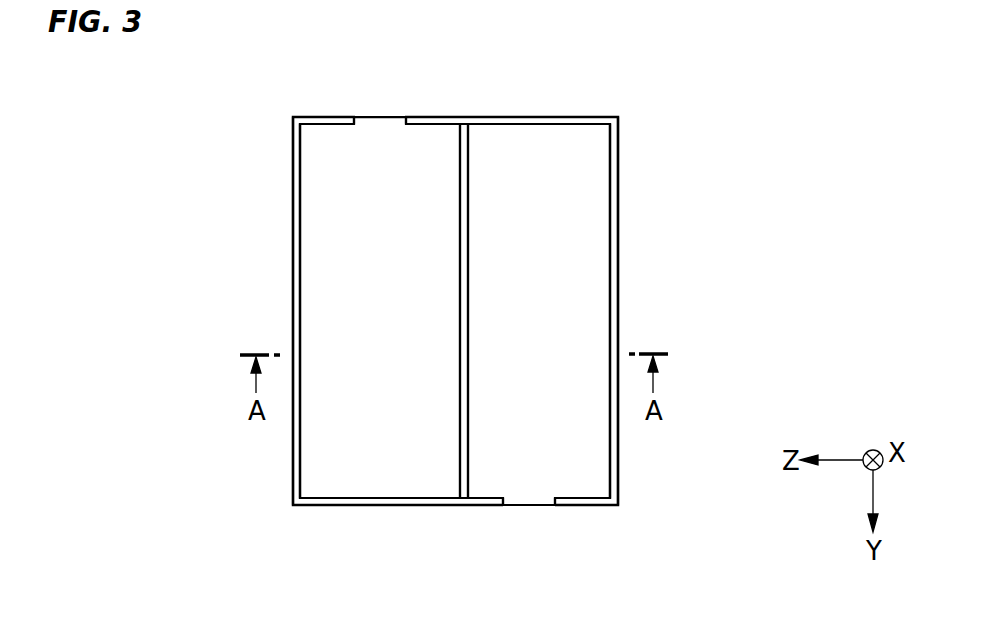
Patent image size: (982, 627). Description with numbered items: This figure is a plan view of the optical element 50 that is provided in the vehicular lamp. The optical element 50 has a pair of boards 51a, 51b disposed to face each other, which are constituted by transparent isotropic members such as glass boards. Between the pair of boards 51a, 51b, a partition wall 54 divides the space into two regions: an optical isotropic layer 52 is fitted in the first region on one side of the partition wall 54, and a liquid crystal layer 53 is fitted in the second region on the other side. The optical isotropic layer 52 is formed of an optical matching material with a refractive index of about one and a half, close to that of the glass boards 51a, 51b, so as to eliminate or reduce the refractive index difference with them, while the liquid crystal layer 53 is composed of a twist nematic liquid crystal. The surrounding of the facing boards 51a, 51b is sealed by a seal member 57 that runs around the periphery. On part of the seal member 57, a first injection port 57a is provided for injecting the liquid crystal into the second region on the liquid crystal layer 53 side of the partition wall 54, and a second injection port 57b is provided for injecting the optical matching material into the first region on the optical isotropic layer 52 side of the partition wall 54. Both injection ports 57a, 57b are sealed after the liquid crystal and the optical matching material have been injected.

The optical element 50 is at (250, 111).
The board 51a is at (618, 212).
The board 51b is at (536, 311).
The optical isotropic layer 52 is at (413, 188).
The liquid crystal layer 53 is at (538, 182).
The partition wall 54 is at (466, 177).
The seal member 57 is at (293, 250).
The first injection port 57a is at (504, 503).
The second injection port 57b is at (355, 118).